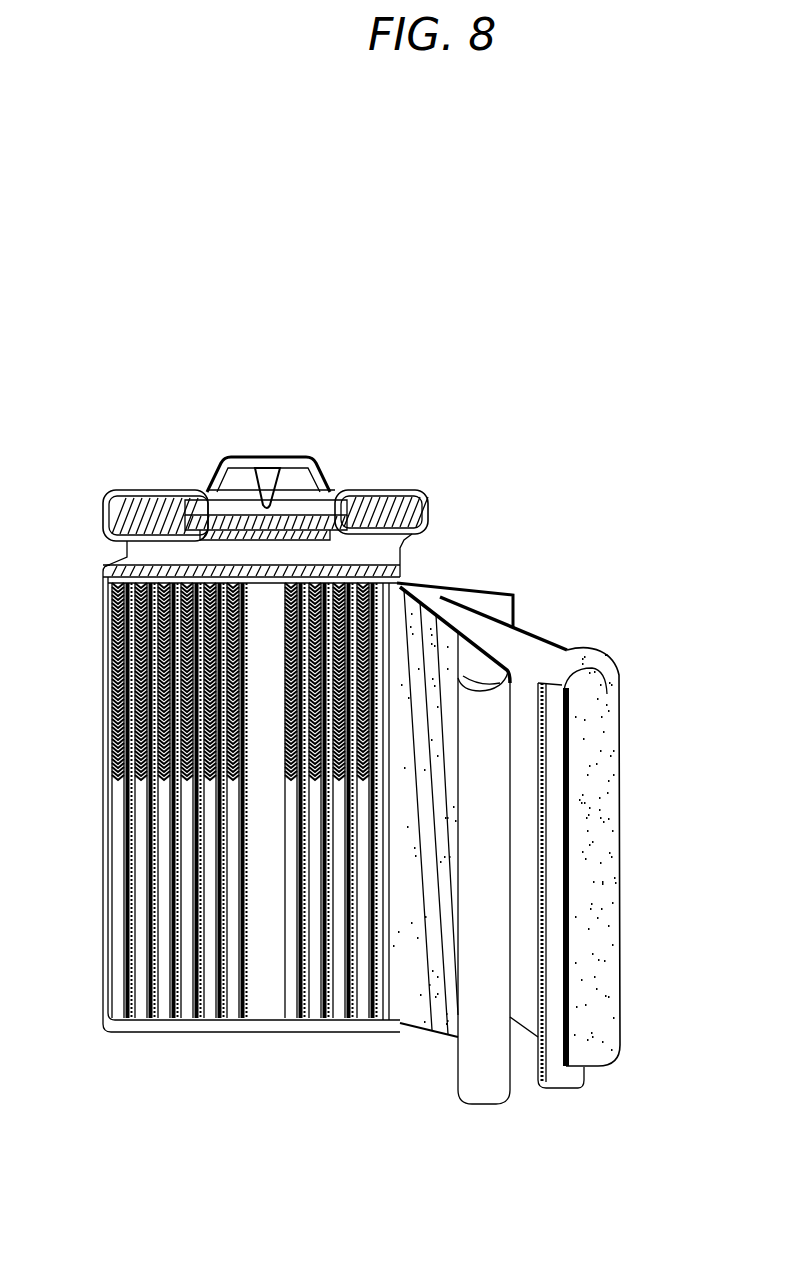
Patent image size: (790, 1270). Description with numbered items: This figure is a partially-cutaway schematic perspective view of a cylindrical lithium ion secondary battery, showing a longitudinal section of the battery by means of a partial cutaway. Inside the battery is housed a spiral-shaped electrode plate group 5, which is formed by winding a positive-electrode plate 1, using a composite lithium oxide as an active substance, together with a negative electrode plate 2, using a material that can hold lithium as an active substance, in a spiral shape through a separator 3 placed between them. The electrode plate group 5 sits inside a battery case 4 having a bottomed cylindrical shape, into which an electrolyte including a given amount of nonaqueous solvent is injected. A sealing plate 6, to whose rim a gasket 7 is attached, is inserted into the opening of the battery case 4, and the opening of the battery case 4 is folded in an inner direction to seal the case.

The positive-electrode plate 1 is at (459, 647).
The negative electrode plate 2 is at (541, 624).
The separator 3 is at (544, 664).
The battery case 4 is at (100, 789).
The electrode plate group 5 is at (668, 463).
The sealing plate 6 is at (158, 492).
The gasket 7 is at (427, 507).